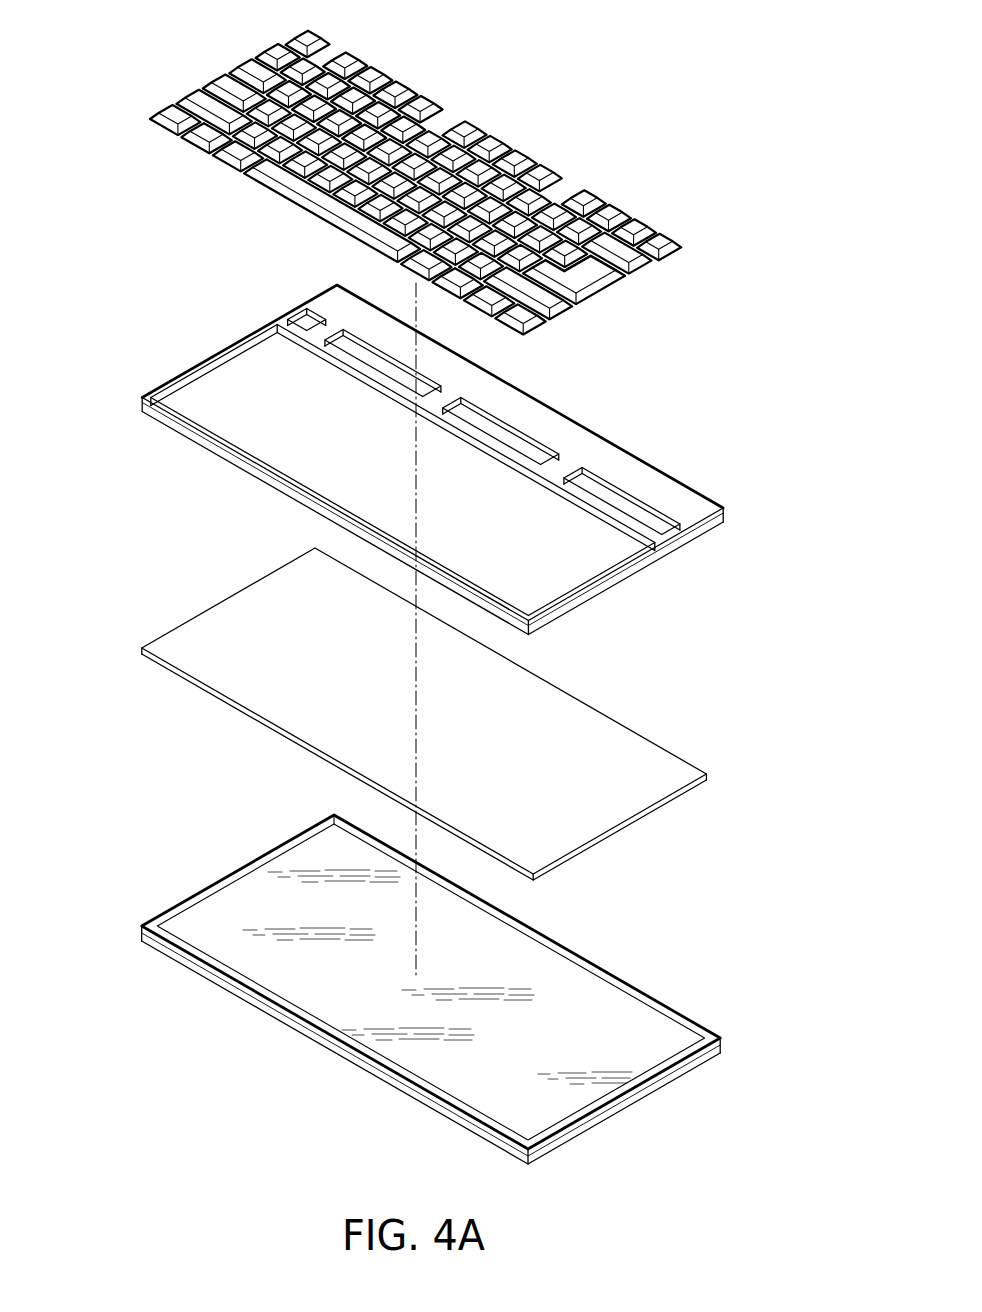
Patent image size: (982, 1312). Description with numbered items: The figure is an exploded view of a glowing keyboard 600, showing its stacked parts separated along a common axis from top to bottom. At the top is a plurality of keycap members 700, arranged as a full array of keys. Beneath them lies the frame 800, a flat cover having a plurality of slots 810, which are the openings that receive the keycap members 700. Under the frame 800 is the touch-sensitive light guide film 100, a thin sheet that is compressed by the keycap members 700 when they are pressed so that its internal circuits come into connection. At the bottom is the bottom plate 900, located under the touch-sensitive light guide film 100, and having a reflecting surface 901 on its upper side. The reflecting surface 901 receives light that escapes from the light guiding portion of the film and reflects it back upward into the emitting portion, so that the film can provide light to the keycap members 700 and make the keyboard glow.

The glowing keyboard 600 is at (100, 41).
The keycap members 700 is at (528, 163).
The frame 800 is at (438, 460).
The slots 810 is at (607, 486).
The touch-sensitive light guide film 100 is at (603, 737).
The bottom plate 900 is at (468, 989).
The reflecting surface 901 is at (553, 998).